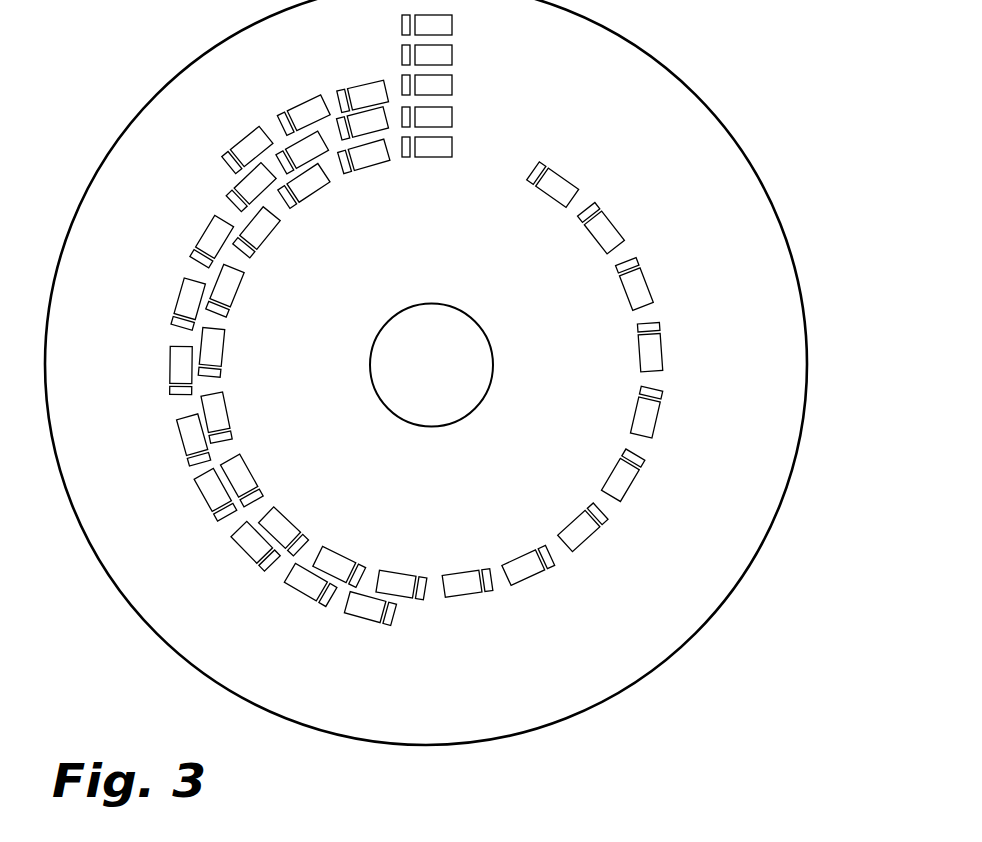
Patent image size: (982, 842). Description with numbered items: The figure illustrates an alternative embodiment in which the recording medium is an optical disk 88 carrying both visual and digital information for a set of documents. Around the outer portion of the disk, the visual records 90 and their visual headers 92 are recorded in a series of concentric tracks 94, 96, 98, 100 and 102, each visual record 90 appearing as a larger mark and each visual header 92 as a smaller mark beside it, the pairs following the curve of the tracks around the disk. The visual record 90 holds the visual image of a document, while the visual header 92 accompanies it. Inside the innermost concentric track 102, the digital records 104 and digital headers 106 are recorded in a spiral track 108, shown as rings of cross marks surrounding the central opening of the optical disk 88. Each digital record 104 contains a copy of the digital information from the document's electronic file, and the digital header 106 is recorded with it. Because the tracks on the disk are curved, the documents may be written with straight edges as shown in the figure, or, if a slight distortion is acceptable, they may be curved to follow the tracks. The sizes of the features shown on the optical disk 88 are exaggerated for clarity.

The optical disk 88 is at (686, 86).
The visual record 90 is at (305, 99).
The visual header 92 is at (283, 116).
The concentric track 94 is at (450, 25).
The concentric track 96 is at (450, 55).
The concentric track 98 is at (450, 85).
The concentric track 100 is at (456, 117).
The concentric track 102 is at (456, 147).
The digital record 104 is at (303, 410).
The digital header 106 is at (328, 444).
The spiral track 108 is at (514, 159).